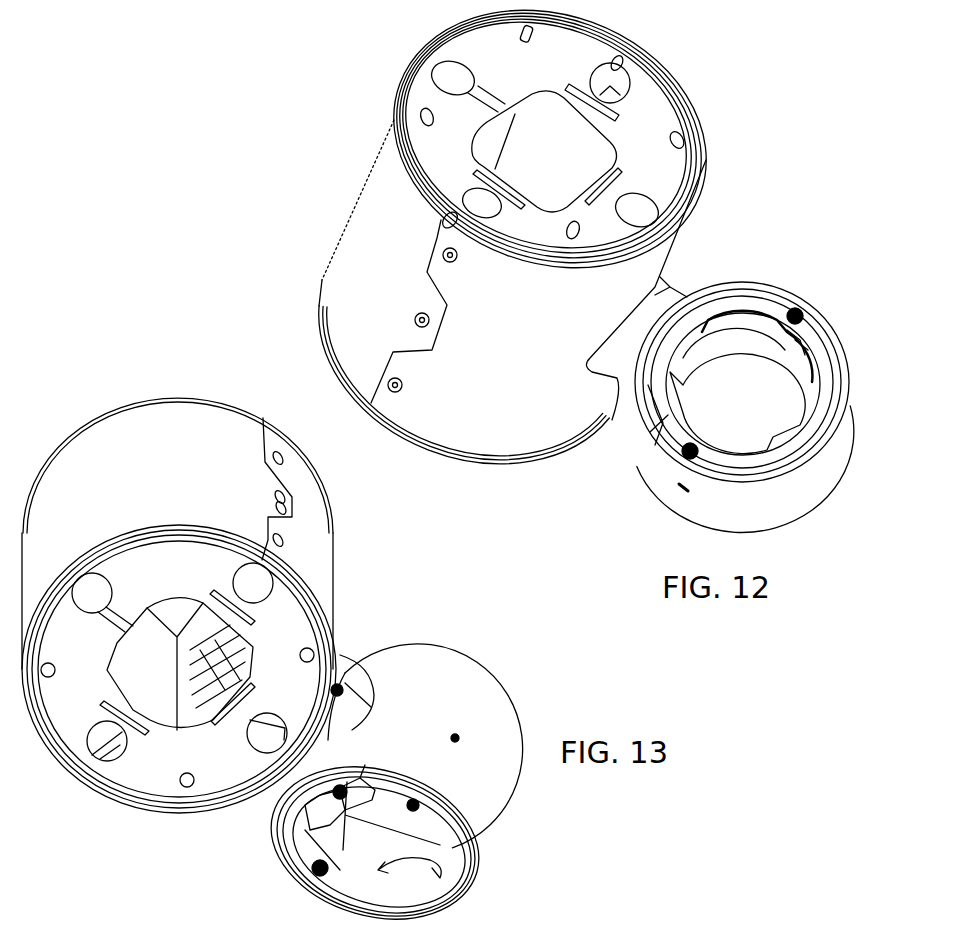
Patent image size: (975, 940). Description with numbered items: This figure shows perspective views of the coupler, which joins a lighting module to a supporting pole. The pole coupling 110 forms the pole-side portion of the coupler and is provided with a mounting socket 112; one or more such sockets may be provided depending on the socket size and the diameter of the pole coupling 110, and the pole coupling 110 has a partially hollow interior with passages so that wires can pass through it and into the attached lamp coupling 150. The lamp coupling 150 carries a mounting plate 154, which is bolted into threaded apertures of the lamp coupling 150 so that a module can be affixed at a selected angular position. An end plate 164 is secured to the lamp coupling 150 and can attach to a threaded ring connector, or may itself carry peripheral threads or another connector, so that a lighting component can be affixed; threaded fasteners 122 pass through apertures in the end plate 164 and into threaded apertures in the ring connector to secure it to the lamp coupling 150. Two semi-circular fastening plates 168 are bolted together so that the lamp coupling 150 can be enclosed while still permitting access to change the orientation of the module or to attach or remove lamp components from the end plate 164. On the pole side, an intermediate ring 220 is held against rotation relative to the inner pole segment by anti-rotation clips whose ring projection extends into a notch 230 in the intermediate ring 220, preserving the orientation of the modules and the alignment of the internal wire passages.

In FIG. 12, the pole coupling 110 is at (662, 470).
In FIG. 13, the pole coupling 110 is at (503, 708).
In FIG. 12, the mounting socket 112 is at (687, 297).
In FIG. 13, the mounting socket 112 is at (356, 674).
In FIG. 12, the threaded fastener 122 is at (397, 103).
In FIG. 12, the lamp coupling 150 is at (351, 232).
In FIG. 13, the lamp coupling 150 is at (128, 422).
In FIG. 13, the mounting plate 154 is at (207, 607).
In FIG. 13, the end plate 164 is at (305, 628).
In FIG. 12, the semi-circular fastening plate 168 is at (657, 110).
In FIG. 12, the intermediate ring 220 is at (662, 427).
In FIG. 13, the intermediate ring 220 is at (447, 855).
In FIG. 13, the notch 230 is at (408, 880).